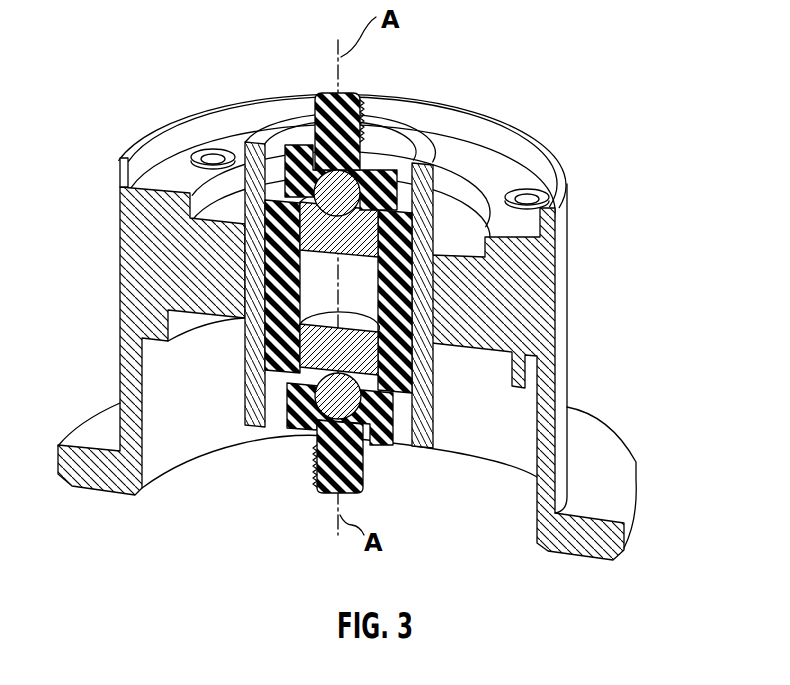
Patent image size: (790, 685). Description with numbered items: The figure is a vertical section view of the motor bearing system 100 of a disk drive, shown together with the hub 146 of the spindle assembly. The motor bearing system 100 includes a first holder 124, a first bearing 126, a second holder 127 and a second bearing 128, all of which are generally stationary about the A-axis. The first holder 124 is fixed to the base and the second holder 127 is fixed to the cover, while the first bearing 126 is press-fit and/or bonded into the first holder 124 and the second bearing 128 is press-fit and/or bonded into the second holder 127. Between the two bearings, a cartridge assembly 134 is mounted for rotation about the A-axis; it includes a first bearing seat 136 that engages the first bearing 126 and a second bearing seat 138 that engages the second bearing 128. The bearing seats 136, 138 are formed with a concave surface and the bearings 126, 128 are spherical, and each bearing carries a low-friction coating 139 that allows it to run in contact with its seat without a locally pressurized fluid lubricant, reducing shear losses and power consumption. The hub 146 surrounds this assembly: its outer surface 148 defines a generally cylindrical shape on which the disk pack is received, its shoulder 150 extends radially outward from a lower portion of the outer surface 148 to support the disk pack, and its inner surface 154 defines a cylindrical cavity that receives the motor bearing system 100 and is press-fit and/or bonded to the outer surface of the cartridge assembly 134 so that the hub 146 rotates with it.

The motor bearing system 100 is at (298, 80).
The first holder 124 is at (320, 470).
The first bearing 126 is at (380, 413).
The second holder 127 is at (352, 118).
The second bearing 128 is at (346, 192).
The cartridge assembly 134 is at (450, 205).
The first bearing seat 136 is at (285, 412).
The second bearing seat 138 is at (300, 242).
The low-friction coating 139 is at (320, 200).
The hub 146 is at (374, 327).
The outer surface 148 is at (567, 378).
The shoulder 150 is at (637, 475).
The inner surface 154 is at (427, 293).